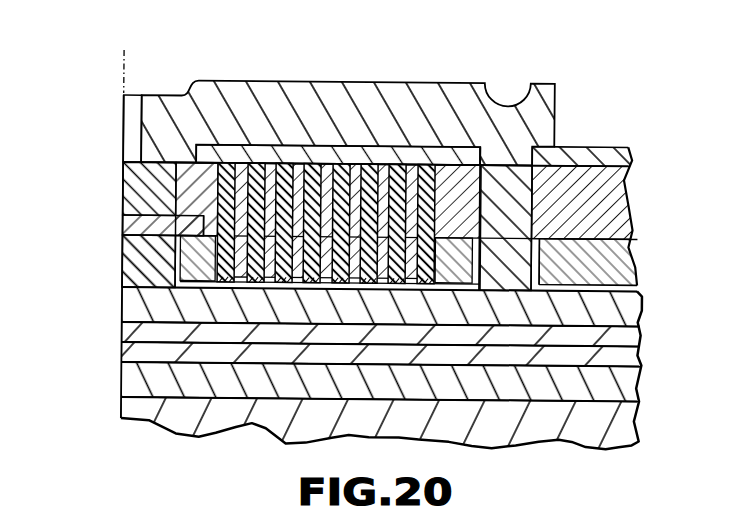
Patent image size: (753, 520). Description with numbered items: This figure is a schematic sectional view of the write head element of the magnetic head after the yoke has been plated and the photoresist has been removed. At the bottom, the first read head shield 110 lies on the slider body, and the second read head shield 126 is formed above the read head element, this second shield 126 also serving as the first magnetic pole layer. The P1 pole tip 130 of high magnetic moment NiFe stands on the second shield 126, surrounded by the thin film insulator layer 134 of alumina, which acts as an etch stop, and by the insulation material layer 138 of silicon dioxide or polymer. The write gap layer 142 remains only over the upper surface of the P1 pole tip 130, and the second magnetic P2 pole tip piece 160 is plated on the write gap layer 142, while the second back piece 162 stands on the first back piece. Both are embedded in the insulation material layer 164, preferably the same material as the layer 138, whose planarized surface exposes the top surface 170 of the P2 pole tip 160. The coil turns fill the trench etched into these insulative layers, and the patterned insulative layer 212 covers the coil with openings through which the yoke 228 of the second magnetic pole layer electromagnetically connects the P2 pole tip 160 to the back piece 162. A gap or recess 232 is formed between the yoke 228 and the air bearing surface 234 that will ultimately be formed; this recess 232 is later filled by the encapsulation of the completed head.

The first read head shield 110 is at (122, 372).
The second read head shield 126 is at (122, 298).
The P1 pole tip 130 is at (122, 260).
The thin film insulator layer 134 is at (638, 287).
The insulation material layer 138 is at (622, 262).
The write gap layer 142 is at (122, 220).
The second magnetic P2 pole tip piece 160 is at (122, 186).
The second back piece 162 is at (518, 162).
The insulation material layer 164 is at (629, 192).
The top surface of the P2 pole tip 170 is at (152, 157).
The patterned insulative layer 212 is at (240, 144).
The yoke portion of the second magnetic pole layer 228 is at (388, 80).
The gap or recess 232 is at (133, 110).
The air bearing surface 234 is at (118, 75).